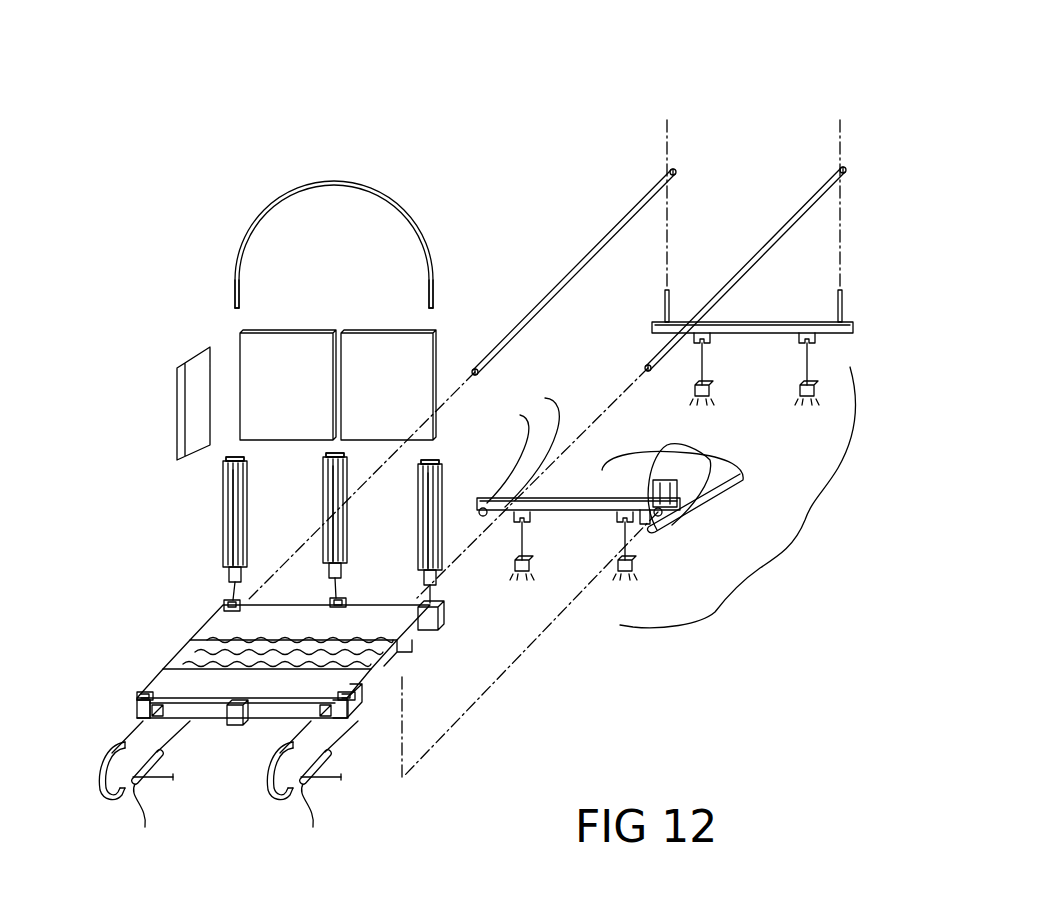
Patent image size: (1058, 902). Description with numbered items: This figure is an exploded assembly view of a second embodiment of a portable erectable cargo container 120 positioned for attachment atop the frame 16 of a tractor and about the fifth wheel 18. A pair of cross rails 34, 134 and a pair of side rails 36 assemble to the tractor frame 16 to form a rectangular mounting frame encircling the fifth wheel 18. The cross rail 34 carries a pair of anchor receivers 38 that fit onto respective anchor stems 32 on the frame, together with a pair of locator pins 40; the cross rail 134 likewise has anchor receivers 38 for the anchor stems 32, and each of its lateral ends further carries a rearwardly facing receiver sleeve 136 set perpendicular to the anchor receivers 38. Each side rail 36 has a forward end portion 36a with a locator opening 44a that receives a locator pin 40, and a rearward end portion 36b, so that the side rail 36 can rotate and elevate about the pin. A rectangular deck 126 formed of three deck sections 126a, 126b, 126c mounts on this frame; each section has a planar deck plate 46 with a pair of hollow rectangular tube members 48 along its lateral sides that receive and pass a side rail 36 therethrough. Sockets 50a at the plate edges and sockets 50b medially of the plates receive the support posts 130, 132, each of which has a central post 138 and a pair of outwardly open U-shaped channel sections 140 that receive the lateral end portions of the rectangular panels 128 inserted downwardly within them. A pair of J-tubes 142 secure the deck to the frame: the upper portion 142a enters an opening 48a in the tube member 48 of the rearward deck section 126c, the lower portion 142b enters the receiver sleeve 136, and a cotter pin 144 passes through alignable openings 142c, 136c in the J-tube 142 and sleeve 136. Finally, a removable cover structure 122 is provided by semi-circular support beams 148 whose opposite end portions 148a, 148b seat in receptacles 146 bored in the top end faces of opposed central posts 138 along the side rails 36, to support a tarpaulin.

The cargo container 120 is at (553, 97).
The cover structure 122 is at (332, 219).
The semi-circular support beam 148 is at (240, 240).
The end portion of support beam 148a is at (234, 296).
The end portion of support beam 148b is at (431, 256).
The panel 128 is at (390, 330).
The support post 130 is at (216, 505).
The support post 132 is at (318, 526).
The U-shaped channel section 140 is at (225, 522).
The receptacle 146 is at (235, 458).
The central post 138 is at (228, 582).
The deck 126 is at (243, 625).
The deck section 126a is at (213, 627).
The deck section 126b is at (180, 652).
The deck section 126c is at (165, 685).
The socket 50a is at (240, 600).
The socket 50b is at (338, 608).
The deck plate 46 is at (410, 624).
The hollow tubular member 48 is at (136, 708).
The opening 48a is at (135, 715).
The J-tube 142 is at (226, 788).
The upper portion of J-tube 142a is at (113, 751).
The lower portion of J-tube 142b is at (173, 779).
The opening 142c is at (230, 842).
The cotter pin 144 is at (172, 781).
The side rail 36 is at (647, 267).
The forward end portion 36a is at (656, 185).
The rearward end portion 36b is at (490, 362).
The locator opening 44a is at (668, 172).
The cross rail 34 is at (795, 390).
The locator pin 40 is at (669, 300).
The anchor receiver 38 is at (704, 345).
The anchor stem 32 is at (706, 396).
The fifth wheel 18 is at (666, 457).
The receiver sleeve 136 is at (635, 457).
The opening 136c is at (745, 452).
The cross rail 134 is at (692, 520).
The tractor frame 16 is at (832, 450).